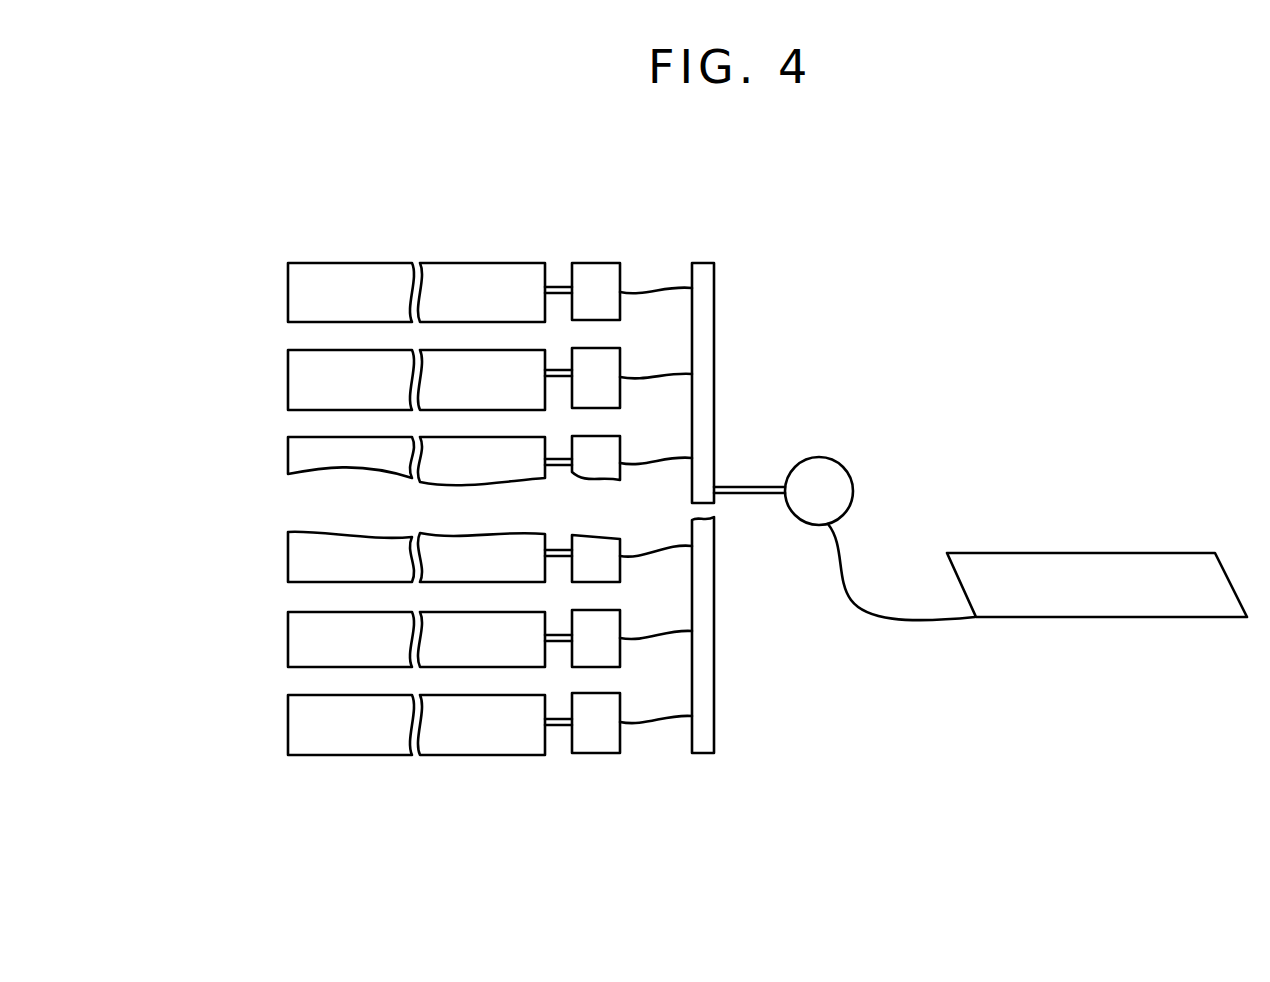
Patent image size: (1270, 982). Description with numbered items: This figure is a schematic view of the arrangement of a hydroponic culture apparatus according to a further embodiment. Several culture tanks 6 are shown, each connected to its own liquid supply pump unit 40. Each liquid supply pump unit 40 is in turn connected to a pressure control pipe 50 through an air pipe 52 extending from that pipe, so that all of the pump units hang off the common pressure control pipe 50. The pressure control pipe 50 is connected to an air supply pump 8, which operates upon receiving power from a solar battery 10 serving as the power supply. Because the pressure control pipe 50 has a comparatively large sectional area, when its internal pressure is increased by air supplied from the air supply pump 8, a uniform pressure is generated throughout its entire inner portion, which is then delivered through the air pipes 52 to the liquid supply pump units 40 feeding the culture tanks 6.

The culture tank 6 is at (297, 289).
The liquid supply pump unit 40 is at (592, 268).
The air pipe 52 is at (657, 289).
The pressure control pipe 50 is at (716, 278).
The air supply pump 8 is at (830, 470).
The solar battery 10 is at (1160, 562).